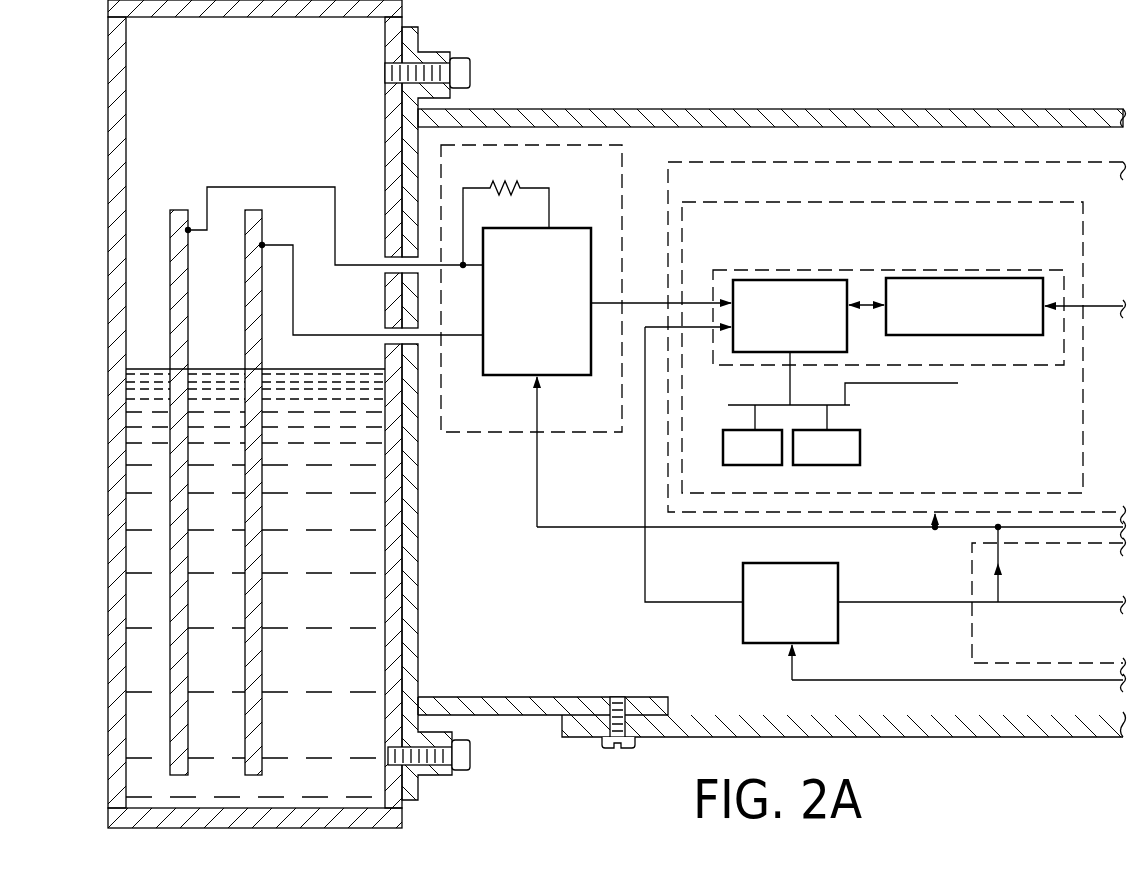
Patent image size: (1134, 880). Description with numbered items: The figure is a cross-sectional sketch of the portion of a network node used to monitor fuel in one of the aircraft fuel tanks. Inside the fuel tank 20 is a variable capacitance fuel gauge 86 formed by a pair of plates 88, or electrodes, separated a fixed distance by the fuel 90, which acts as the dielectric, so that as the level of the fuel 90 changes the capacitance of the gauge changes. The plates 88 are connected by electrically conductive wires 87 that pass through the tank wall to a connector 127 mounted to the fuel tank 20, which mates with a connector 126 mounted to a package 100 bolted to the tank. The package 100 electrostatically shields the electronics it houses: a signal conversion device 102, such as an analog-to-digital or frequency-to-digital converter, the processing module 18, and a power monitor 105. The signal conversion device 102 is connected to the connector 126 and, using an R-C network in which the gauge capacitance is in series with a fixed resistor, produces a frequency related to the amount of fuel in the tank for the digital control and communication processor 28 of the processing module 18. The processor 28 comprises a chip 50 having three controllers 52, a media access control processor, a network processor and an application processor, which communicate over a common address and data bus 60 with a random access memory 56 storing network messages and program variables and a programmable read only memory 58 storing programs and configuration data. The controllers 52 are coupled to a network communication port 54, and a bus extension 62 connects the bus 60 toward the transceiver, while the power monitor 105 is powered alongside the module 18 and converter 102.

The fuel tank 20 is at (107, 96).
The package 100 is at (673, 108).
The fuel gauge 86 is at (218, 265).
The electrically conductive wires 87 is at (335, 225).
The plates 88 is at (188, 720).
The fuel 90 is at (327, 668).
The connector 127 is at (383, 292).
The connector 126 is at (421, 303).
The signal conversion device 102 is at (520, 432).
The processing module 18 is at (897, 343).
The digital control and communication processor 28 is at (930, 202).
The chip 50 is at (912, 365).
The controllers 52 is at (849, 333).
The network communication port 54 is at (1043, 278).
The common address and data bus 60 is at (790, 383).
The bus extension 62 is at (958, 383).
The random access memory 56 is at (723, 447).
The programmable read only memory 58 is at (860, 445).
The power monitor 105 is at (743, 626).